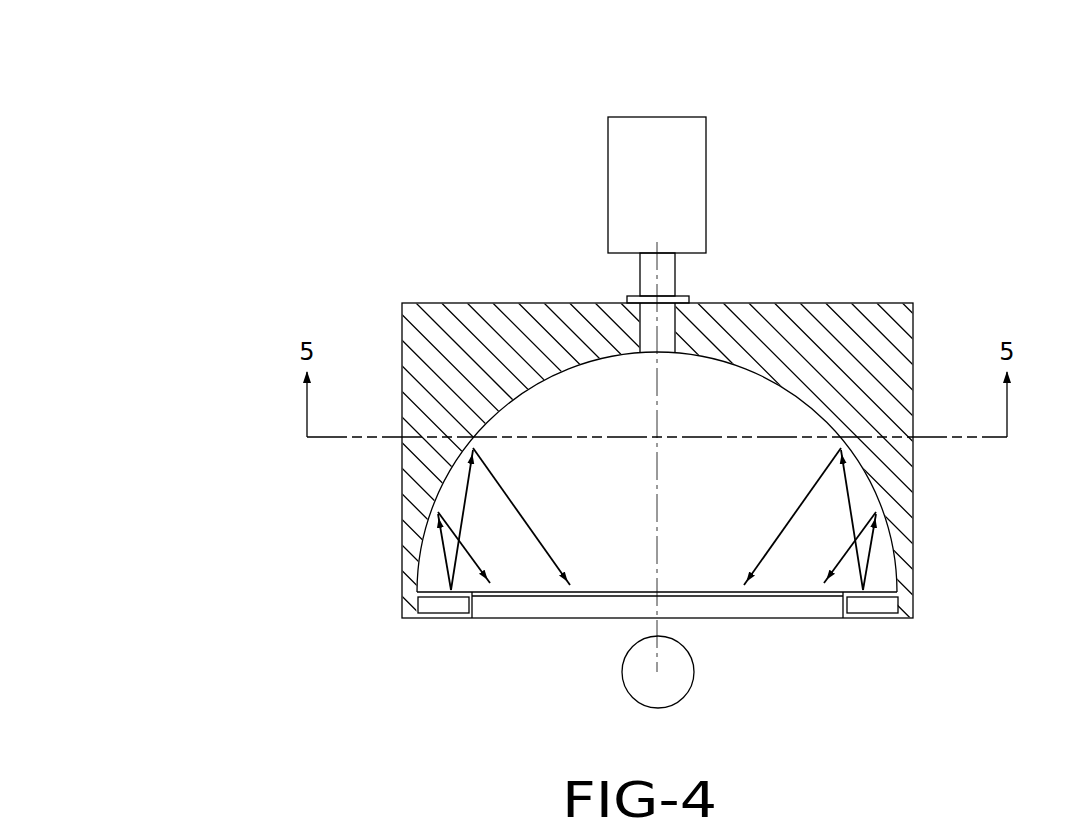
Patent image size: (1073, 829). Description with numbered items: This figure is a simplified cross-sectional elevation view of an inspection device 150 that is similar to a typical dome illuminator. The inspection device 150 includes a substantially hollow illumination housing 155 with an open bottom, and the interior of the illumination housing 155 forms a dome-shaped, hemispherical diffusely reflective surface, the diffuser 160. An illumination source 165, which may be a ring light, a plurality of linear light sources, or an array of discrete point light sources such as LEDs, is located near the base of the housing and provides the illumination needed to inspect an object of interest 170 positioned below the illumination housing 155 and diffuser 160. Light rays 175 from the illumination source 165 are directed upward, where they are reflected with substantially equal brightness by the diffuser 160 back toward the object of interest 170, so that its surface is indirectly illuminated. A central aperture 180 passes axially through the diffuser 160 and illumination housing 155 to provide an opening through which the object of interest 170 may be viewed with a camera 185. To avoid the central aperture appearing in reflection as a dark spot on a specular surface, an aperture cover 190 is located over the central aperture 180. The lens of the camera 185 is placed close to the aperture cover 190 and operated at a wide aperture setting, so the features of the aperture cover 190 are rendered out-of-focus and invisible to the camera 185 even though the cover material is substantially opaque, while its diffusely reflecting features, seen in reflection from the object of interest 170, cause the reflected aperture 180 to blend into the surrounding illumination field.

The inspection device 150 is at (257, 137).
The illumination housing 155 is at (445, 318).
The diffuser 160 is at (537, 383).
The illumination source 165 is at (873, 603).
The object of interest 170 is at (622, 683).
The light rays 175 is at (820, 478).
The central aperture 180 is at (646, 340).
The camera 185 is at (707, 162).
The aperture cover 190 is at (678, 301).